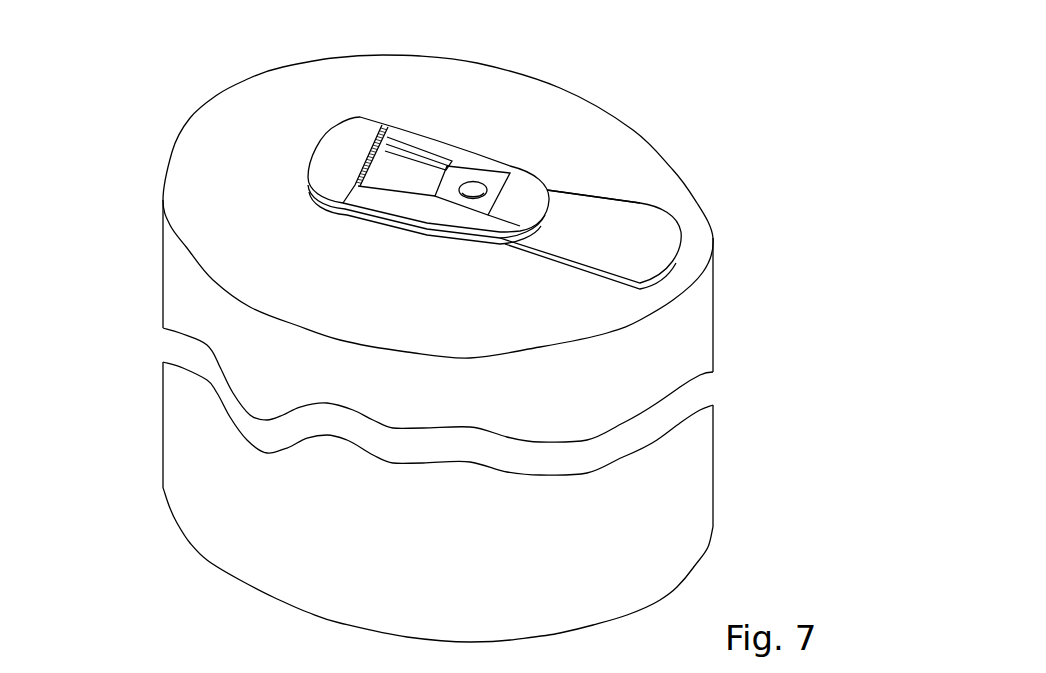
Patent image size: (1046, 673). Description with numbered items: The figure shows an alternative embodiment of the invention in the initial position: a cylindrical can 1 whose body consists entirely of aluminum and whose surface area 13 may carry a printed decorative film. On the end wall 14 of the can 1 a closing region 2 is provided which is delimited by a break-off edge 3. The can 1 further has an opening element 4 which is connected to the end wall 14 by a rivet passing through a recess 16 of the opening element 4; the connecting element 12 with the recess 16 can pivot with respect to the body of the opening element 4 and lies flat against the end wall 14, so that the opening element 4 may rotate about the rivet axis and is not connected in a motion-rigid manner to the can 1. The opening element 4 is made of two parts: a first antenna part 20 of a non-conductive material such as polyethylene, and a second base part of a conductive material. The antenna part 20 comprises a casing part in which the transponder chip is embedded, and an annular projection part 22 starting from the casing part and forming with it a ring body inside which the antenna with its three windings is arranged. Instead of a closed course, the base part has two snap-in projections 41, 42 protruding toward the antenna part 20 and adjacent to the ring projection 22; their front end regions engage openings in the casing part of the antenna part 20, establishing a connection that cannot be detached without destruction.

The can 1 is at (390, 341).
The closing region 2 is at (640, 219).
The break-off edge 3 is at (643, 202).
The opening element 4 is at (482, 168).
The connecting element 12 is at (516, 154).
The surface area 13 is at (207, 447).
The end wall 14 is at (538, 117).
The recess 16 is at (475, 186).
The antenna part 20 is at (343, 157).
The annular projection part 22 is at (475, 235).
The snap-in projection 41 is at (417, 142).
The snap-in projection 42 is at (390, 202).